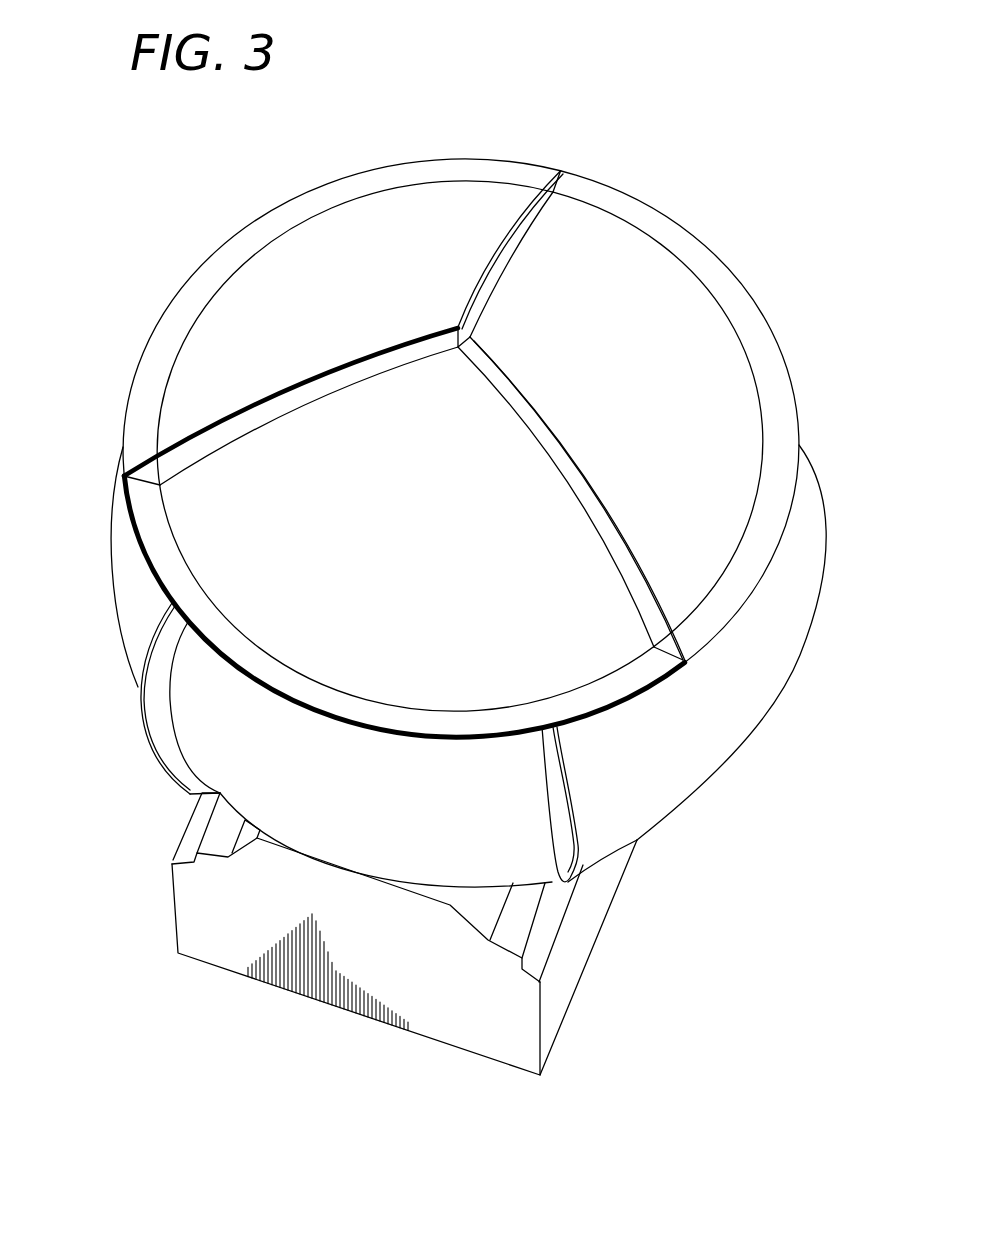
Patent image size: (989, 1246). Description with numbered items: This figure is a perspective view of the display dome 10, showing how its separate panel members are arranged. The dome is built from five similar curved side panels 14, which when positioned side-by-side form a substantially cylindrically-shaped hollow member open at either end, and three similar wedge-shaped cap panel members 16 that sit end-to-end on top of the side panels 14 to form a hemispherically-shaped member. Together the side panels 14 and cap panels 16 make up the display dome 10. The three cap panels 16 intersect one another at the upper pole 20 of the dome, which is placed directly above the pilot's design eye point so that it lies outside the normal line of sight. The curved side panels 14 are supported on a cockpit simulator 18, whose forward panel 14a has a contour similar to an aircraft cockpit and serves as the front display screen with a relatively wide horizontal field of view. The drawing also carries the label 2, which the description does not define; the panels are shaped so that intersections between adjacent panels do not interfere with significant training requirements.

The display dome 10 is at (158, 218).
The cap panel member 16 is at (213, 372).
The upper pole 20 is at (456, 325).
The stent body 2 is at (768, 648).
The side panel 14 is at (708, 658).
The forward panel 14a is at (208, 699).
The cockpit simulator 18 is at (165, 900).